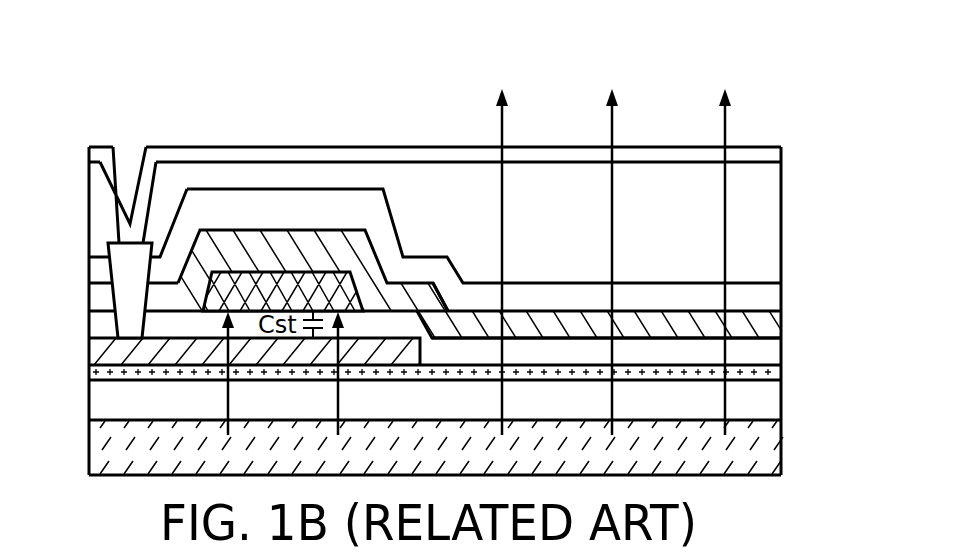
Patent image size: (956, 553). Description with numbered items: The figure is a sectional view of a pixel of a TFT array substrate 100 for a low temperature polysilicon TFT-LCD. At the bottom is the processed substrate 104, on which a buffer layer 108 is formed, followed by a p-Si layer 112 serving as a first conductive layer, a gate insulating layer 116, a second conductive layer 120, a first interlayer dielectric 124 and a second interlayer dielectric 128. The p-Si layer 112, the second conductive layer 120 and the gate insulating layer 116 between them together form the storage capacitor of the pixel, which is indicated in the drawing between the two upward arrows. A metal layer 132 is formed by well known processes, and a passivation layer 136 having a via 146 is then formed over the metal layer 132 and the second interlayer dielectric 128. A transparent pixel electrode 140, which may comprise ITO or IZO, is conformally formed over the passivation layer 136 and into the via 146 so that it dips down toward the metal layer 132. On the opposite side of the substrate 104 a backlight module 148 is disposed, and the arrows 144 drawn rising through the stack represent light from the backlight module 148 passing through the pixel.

The TFT array substrate 100 is at (110, 37).
The processed substrate 104 is at (765, 399).
The buffer layer 108 is at (765, 372).
The p-Si layer 112 is at (104, 348).
The gate insulating layer 116 is at (765, 349).
The second conductive layer 120 is at (205, 291).
The first interlayer dielectric 124 is at (768, 321).
The second interlayer dielectric 128 is at (765, 295).
The metal layer 132 is at (133, 270).
The passivation layer 136 is at (765, 214).
The transparent pixel electrode 140 is at (765, 153).
The arrow 144 is at (729, 118).
The via 146 is at (129, 153).
The backlight module 148 is at (765, 445).